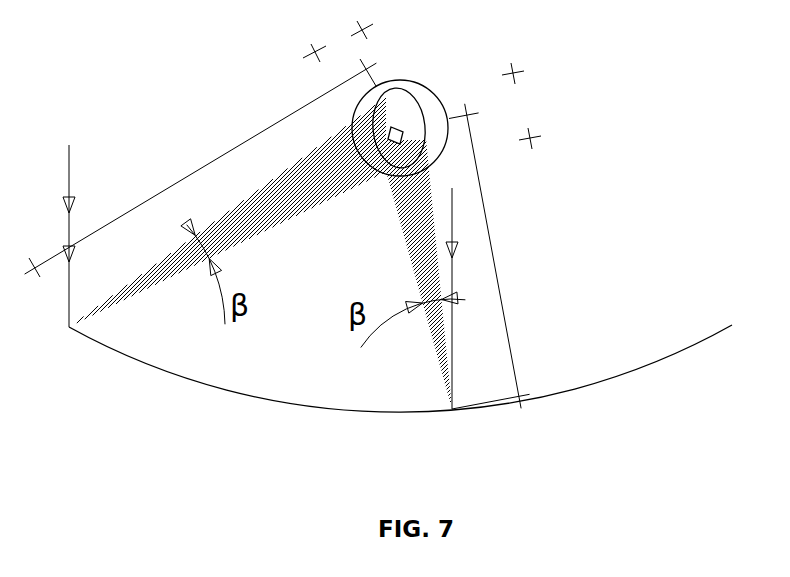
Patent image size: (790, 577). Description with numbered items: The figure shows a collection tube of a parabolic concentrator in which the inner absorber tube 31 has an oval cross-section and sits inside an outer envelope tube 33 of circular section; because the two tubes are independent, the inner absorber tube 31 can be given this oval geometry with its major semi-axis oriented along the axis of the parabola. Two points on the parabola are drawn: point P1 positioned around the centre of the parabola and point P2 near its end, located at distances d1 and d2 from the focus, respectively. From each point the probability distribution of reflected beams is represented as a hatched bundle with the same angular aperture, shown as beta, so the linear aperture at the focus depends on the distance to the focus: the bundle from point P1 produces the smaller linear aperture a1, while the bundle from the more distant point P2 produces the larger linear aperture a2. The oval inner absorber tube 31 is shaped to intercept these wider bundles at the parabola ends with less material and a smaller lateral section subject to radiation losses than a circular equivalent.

The inner absorber tube 31 is at (381, 176).
The outer envelope tube 33 is at (381, 178).
The point p1 P1 is at (456, 323).
The point p2 P2 is at (59, 260).
The distance d1 is at (489, 256).
The distance d2 is at (201, 168).
The linear aperture a1 is at (338, 41).
The linear aperture a2 is at (521, 106).